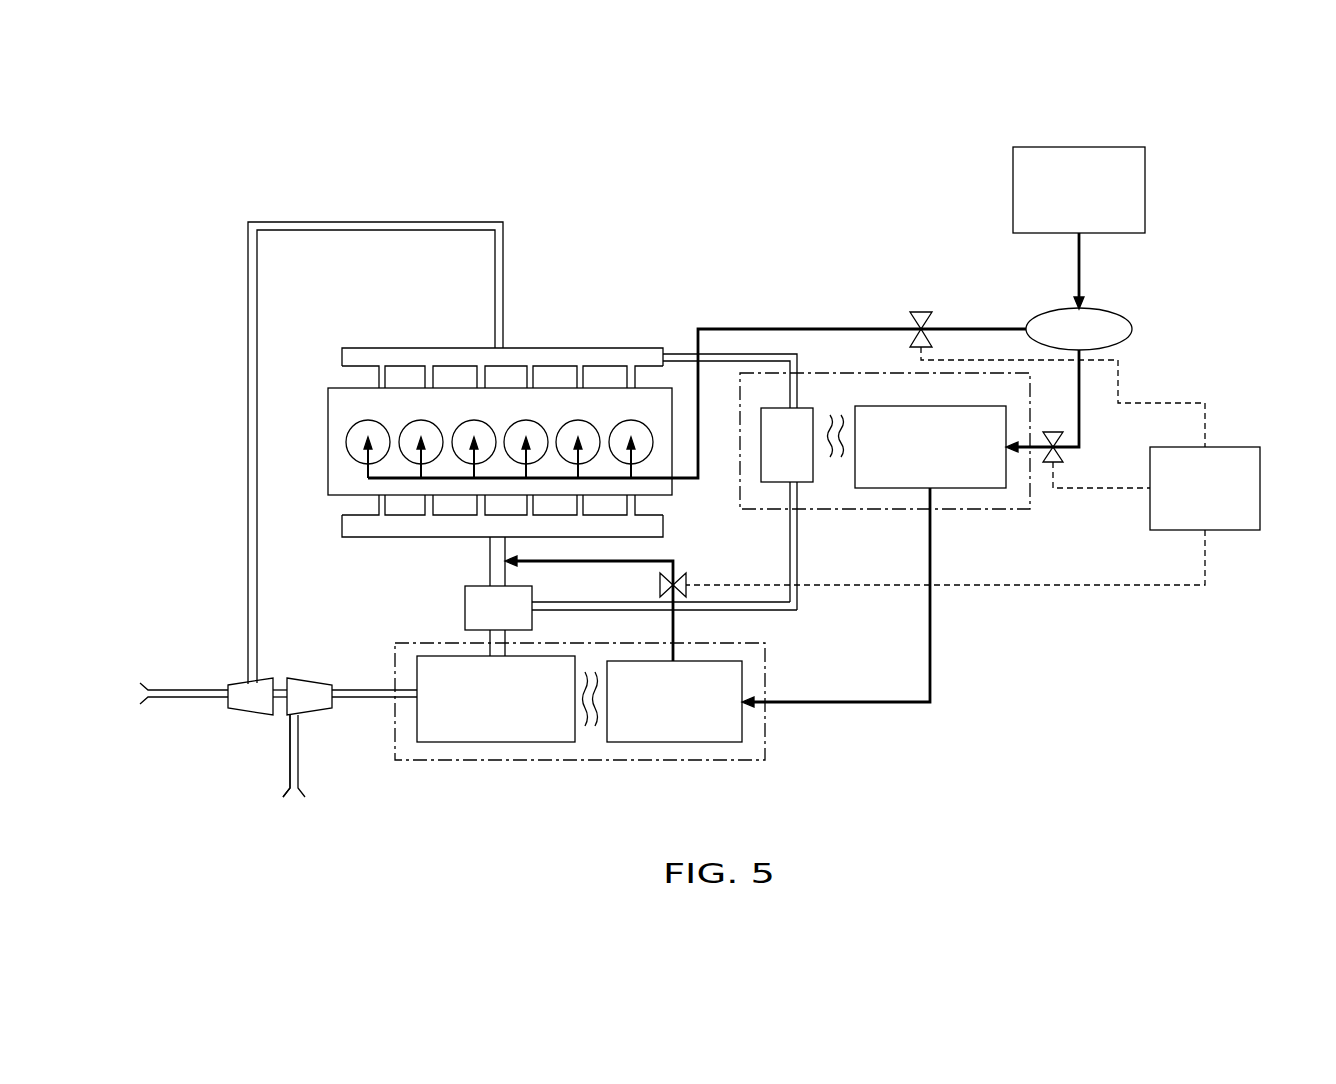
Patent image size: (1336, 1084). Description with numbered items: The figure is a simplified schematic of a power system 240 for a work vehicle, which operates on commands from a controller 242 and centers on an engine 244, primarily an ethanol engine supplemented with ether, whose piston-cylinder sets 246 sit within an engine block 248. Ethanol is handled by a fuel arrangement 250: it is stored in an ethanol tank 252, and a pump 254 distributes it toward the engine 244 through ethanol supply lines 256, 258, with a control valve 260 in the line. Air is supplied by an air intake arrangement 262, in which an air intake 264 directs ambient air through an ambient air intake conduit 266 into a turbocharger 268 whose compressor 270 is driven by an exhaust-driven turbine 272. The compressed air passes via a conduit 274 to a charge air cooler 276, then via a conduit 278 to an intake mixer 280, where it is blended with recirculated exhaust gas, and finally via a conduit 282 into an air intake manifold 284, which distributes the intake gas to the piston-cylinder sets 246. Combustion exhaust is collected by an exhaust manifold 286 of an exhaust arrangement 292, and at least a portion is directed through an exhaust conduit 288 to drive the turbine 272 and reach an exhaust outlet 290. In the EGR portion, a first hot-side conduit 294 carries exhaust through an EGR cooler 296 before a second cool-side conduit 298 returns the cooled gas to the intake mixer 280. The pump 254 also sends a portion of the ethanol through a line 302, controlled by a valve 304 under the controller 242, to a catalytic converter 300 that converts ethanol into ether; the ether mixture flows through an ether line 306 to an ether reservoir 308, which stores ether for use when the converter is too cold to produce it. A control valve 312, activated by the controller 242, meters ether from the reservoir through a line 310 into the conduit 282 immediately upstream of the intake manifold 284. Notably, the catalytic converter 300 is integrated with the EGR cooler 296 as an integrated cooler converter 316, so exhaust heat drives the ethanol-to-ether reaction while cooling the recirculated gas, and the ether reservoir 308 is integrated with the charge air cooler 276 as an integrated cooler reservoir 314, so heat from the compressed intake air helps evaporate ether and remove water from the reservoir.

The power system 240 is at (218, 423).
The controller 242 is at (1235, 447).
The engine 244 is at (327, 445).
The piston-cylinder sets 246 is at (382, 427).
The engine block 248 is at (328, 410).
The fuel arrangement 250 is at (930, 266).
The ethanol tank 252 is at (1085, 147).
The pump 254 is at (1115, 313).
The ethanol supply line 256 is at (1085, 270).
The ethanol supply line 258 is at (972, 326).
The control valve 260 is at (916, 312).
The air intake arrangement 262 is at (368, 632).
The air intake 264 is at (278, 798).
The ambient air intake conduit 266 is at (297, 735).
The turbocharger 268 is at (258, 730).
The compressor 270 is at (308, 680).
The turbine 272 is at (235, 682).
The conduit 274 is at (372, 715).
The charge air cooler 276 is at (497, 742).
The conduit 278 is at (490, 648).
The intake mixer 280 is at (465, 608).
The conduit 282 is at (492, 560).
The air intake manifold 284 is at (378, 540).
The exhaust manifold 286 is at (578, 355).
The exhaust conduit 288 is at (505, 252).
The exhaust outlet 290 is at (155, 705).
The exhaust arrangement 292 is at (748, 512).
The first conduit 294 is at (685, 358).
The EGR cooler 296 is at (760, 450).
The second conduit 298 is at (763, 613).
The catalytic converter 300 is at (968, 490).
The line 302 is at (1080, 420).
The valve 304 is at (1062, 455).
The ether line 306 is at (843, 702).
The ether reservoir 308 is at (680, 742).
The line 310 is at (567, 562).
The control valve 312 is at (688, 577).
The integrated cooler reservoir 314 is at (580, 762).
The integrated cooler converter 316 is at (1010, 512).